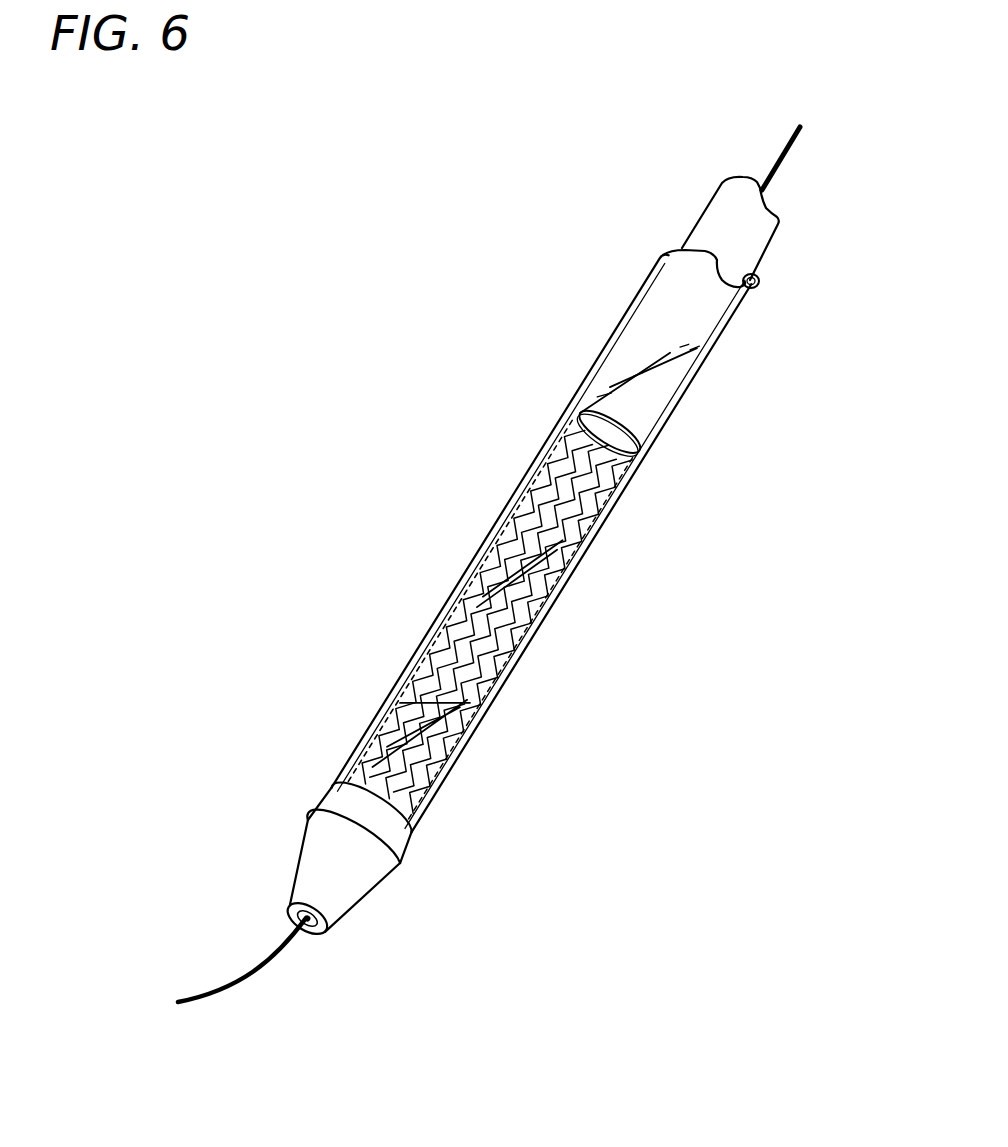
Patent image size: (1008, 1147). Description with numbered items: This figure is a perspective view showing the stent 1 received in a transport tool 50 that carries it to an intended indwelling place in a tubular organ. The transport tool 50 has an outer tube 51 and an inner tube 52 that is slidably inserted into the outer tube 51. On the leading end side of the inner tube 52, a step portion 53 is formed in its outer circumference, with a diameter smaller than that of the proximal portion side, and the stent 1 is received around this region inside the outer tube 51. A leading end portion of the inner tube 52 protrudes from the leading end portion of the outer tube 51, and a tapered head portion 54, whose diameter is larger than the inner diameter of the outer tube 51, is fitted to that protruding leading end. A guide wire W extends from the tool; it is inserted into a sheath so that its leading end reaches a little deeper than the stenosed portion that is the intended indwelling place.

The stent 1 is at (470, 717).
The transport tool 50 is at (460, 466).
The outer tube 51 is at (688, 403).
The inner tube 52 is at (750, 243).
The step portion 53 is at (610, 477).
The tapered head portion 54 is at (370, 878).
The guide wire W is at (265, 972).